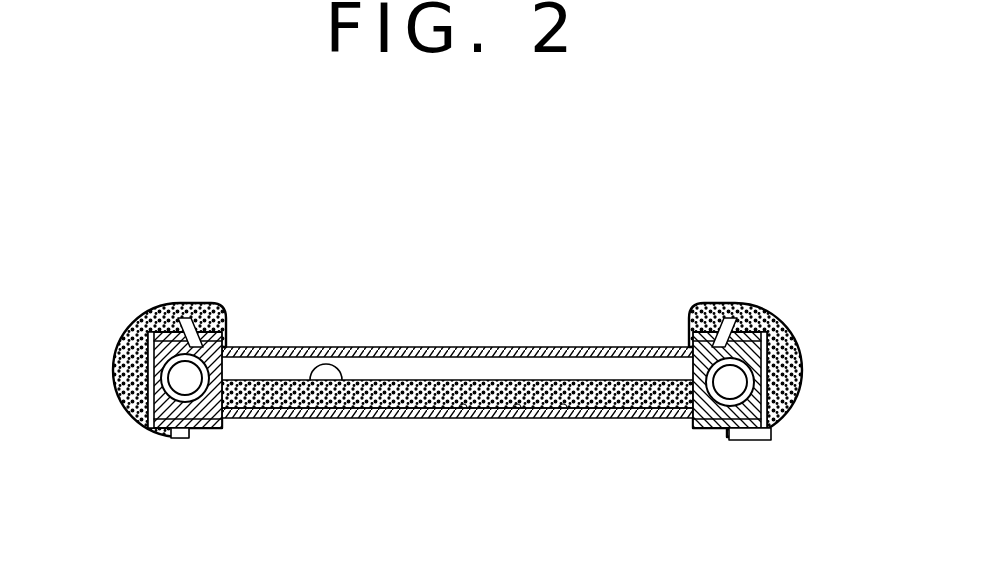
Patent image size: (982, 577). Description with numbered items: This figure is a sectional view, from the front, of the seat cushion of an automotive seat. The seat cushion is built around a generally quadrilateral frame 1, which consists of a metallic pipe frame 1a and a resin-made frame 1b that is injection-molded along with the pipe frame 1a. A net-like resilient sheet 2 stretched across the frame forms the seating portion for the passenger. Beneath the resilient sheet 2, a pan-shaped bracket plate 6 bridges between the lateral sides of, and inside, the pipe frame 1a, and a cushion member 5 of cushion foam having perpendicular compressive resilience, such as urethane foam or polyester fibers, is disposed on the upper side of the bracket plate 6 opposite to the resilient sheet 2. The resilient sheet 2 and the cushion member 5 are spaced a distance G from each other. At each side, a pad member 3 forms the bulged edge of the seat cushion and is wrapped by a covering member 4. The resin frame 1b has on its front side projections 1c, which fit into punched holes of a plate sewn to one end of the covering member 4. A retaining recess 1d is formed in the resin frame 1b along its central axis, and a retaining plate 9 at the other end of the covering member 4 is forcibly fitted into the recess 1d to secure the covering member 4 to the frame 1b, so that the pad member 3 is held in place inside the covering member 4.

The quadrilateral frame 1 is at (489, 373).
The pipe frame 1a is at (784, 410).
The resin-made frame 1b is at (663, 352).
The projections 1c is at (184, 318).
The retaining recess 1d is at (166, 437).
The net-like resilient sheet 2 is at (443, 347).
The pad member 3 is at (798, 357).
The covering member 4 is at (757, 307).
The cushion member 5 is at (312, 377).
The bracket plate 6 is at (513, 418).
The retaining plate 9 is at (750, 440).
The distance G is at (67, 425).